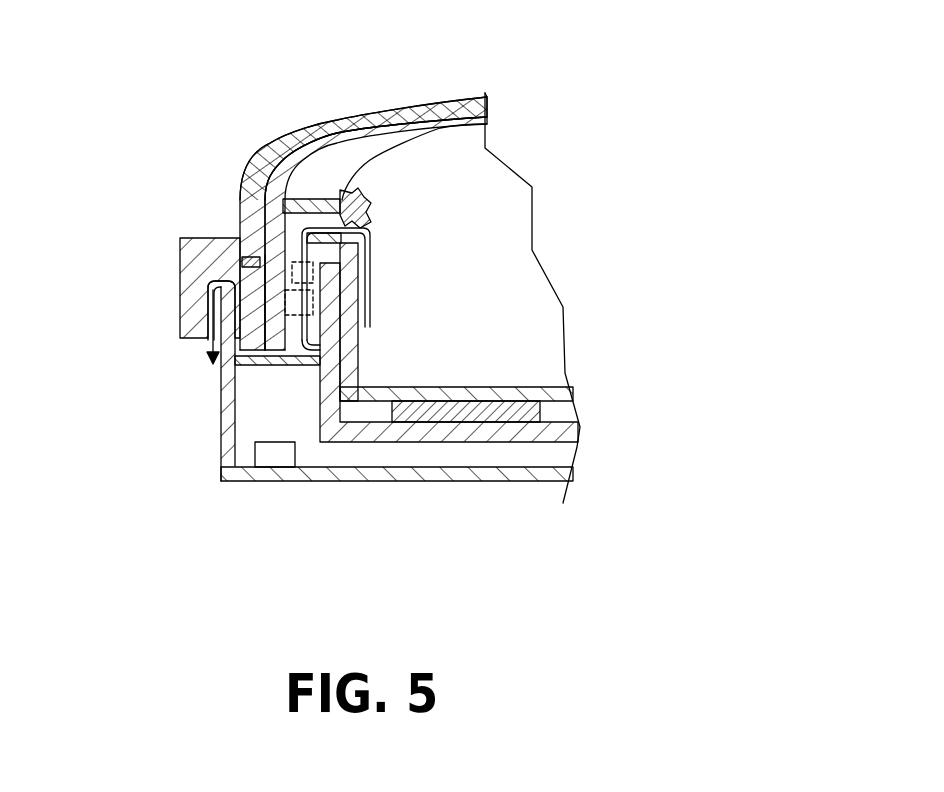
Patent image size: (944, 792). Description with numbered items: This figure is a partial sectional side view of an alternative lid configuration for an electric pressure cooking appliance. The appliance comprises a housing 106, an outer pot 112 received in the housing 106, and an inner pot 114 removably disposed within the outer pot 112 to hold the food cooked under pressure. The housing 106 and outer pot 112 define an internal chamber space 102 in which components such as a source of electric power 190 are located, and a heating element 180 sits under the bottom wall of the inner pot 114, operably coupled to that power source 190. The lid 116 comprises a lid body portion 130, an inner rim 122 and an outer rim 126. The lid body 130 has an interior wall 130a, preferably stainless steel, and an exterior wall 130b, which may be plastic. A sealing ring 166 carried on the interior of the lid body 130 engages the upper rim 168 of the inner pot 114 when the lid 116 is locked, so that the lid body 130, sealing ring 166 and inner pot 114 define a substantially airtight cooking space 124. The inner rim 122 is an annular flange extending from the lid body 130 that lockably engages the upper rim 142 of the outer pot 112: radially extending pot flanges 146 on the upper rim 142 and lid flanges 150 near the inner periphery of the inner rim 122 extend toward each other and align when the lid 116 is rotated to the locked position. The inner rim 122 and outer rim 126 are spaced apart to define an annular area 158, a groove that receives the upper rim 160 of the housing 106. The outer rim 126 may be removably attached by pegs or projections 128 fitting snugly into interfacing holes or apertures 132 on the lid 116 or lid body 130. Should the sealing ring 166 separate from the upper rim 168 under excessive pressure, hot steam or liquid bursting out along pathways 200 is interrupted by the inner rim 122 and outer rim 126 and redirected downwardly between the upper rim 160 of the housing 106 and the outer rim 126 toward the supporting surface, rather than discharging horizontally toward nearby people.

The internal chamber space 102 is at (270, 402).
The housing 106 is at (221, 455).
The outer pot 112 is at (320, 410).
The inner pot 114 is at (340, 353).
The lid 116 is at (432, 103).
The inner rim 122 is at (220, 383).
The cooking space 124 is at (512, 308).
The outer rim 126 is at (193, 314).
The pegs or projections 128 is at (240, 272).
The lid body portion 130 is at (322, 203).
The interior wall 130a is at (368, 214).
The exterior wall 130b is at (250, 207).
The holes or apertures 132 is at (287, 303).
The upper rim of the outer pot 142 is at (367, 232).
The pot flanges 146 is at (307, 263).
The lid flanges 150 is at (242, 258).
The annular area 158 is at (212, 280).
The upper rim of the housing 160 is at (205, 279).
The sealing ring 166 is at (341, 230).
The upper rim of the inner pot 168 is at (487, 122).
The heating element 180 is at (457, 415).
The source of electric power 190 is at (273, 457).
The pathways 200 is at (370, 318).